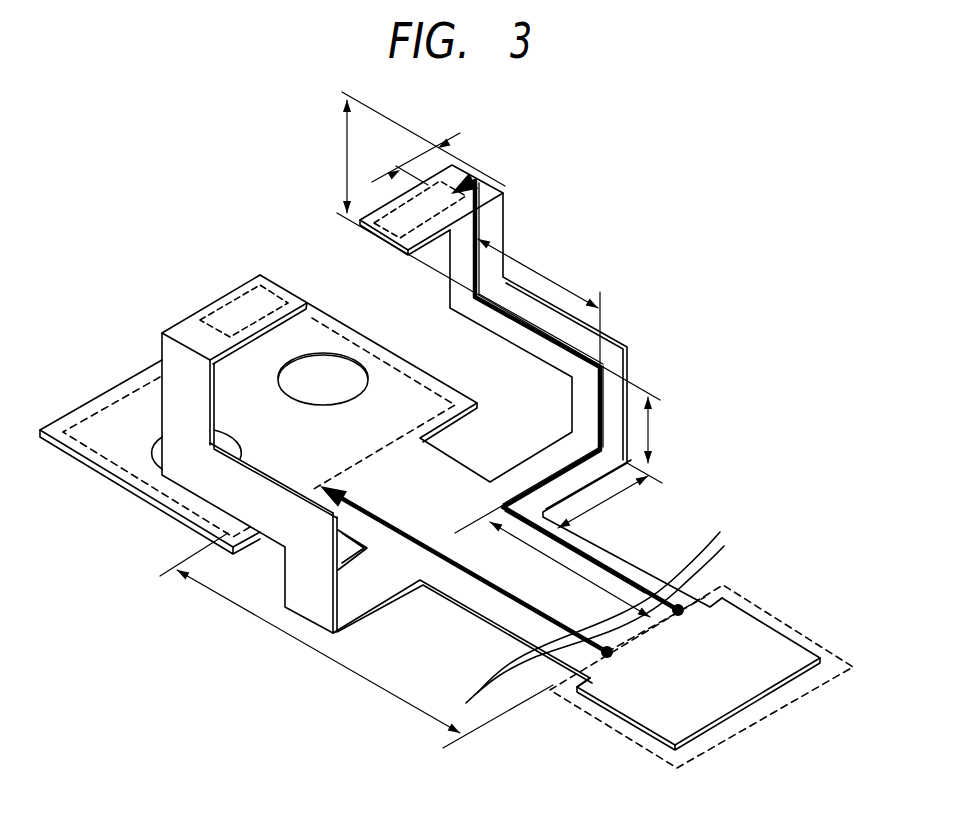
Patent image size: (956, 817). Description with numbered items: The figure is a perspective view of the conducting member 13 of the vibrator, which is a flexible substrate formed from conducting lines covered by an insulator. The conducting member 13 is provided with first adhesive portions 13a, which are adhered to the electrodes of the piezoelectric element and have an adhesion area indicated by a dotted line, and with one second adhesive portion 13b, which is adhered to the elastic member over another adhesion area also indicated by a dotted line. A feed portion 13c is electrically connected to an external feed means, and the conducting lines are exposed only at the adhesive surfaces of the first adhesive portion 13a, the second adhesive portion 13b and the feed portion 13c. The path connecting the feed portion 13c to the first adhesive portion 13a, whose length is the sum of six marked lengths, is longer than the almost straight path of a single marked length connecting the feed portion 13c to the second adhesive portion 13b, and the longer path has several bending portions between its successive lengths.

The conducting member 13 is at (205, 177).
The first adhesive portion 13a is at (442, 190).
The second adhesive portion 13b is at (104, 470).
The feed portion 13c is at (770, 613).